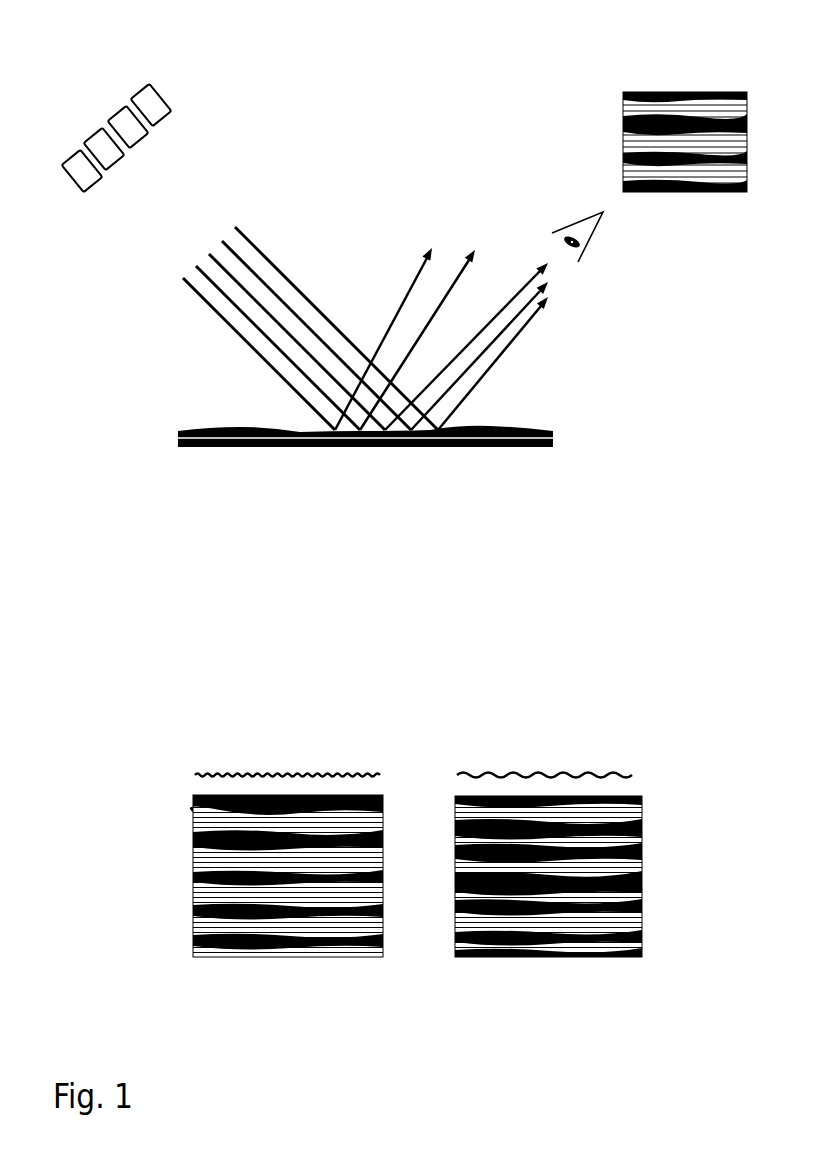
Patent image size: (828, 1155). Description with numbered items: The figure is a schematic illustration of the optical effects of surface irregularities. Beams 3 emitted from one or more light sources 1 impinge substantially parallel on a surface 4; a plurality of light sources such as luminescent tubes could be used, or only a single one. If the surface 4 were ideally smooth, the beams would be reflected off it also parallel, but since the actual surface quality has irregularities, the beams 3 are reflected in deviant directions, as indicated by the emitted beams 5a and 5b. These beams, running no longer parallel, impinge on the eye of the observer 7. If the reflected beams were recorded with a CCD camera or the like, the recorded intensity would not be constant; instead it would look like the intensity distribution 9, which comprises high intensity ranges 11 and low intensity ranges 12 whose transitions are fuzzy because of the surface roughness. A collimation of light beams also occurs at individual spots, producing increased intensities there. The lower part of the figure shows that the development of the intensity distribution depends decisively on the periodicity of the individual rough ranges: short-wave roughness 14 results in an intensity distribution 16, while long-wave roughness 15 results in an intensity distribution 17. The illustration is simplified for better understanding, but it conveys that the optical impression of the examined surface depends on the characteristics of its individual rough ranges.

The light source 1 is at (75, 158).
The beams 3 is at (203, 273).
The surface 4 is at (210, 430).
The emitted beam 5a is at (412, 278).
The emitted beam 5b is at (457, 273).
The eye of the observer 7 is at (580, 244).
The intensity distribution 9 is at (594, 135).
The high intensity ranges 11 is at (668, 137).
The low intensity ranges 12 is at (718, 127).
The short-wave roughness 14 is at (253, 772).
The long-wave roughness 15 is at (548, 765).
The intensity distribution 16 is at (227, 933).
The intensity distribution 17 is at (505, 925).